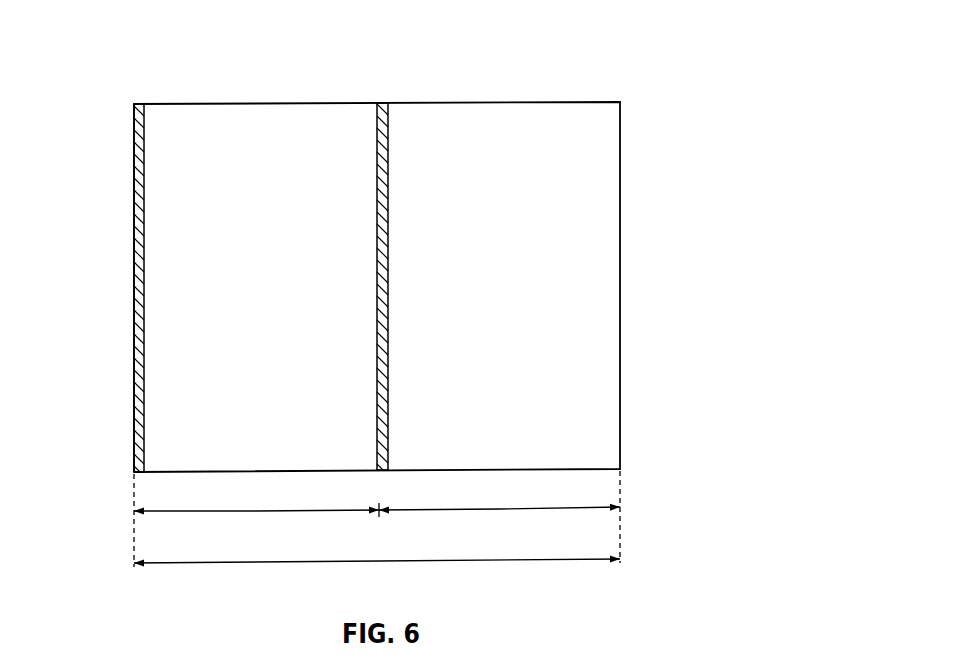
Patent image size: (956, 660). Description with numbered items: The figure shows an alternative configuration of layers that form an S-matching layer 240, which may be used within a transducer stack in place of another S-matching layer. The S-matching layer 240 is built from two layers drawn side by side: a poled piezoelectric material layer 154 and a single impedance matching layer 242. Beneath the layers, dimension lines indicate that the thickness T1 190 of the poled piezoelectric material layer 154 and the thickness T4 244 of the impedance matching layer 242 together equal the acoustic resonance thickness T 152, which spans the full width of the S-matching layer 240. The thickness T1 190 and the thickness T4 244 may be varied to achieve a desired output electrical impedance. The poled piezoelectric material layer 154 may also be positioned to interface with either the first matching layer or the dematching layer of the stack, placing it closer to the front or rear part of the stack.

The S-matching layer 240 is at (130, 63).
The poled piezoelectric material layer 154 is at (301, 117).
The impedance matching layer 242 is at (543, 113).
The thickness T1 190 is at (258, 509).
The thickness T4 244 is at (502, 507).
The acoustic resonance thickness T 152 is at (380, 561).